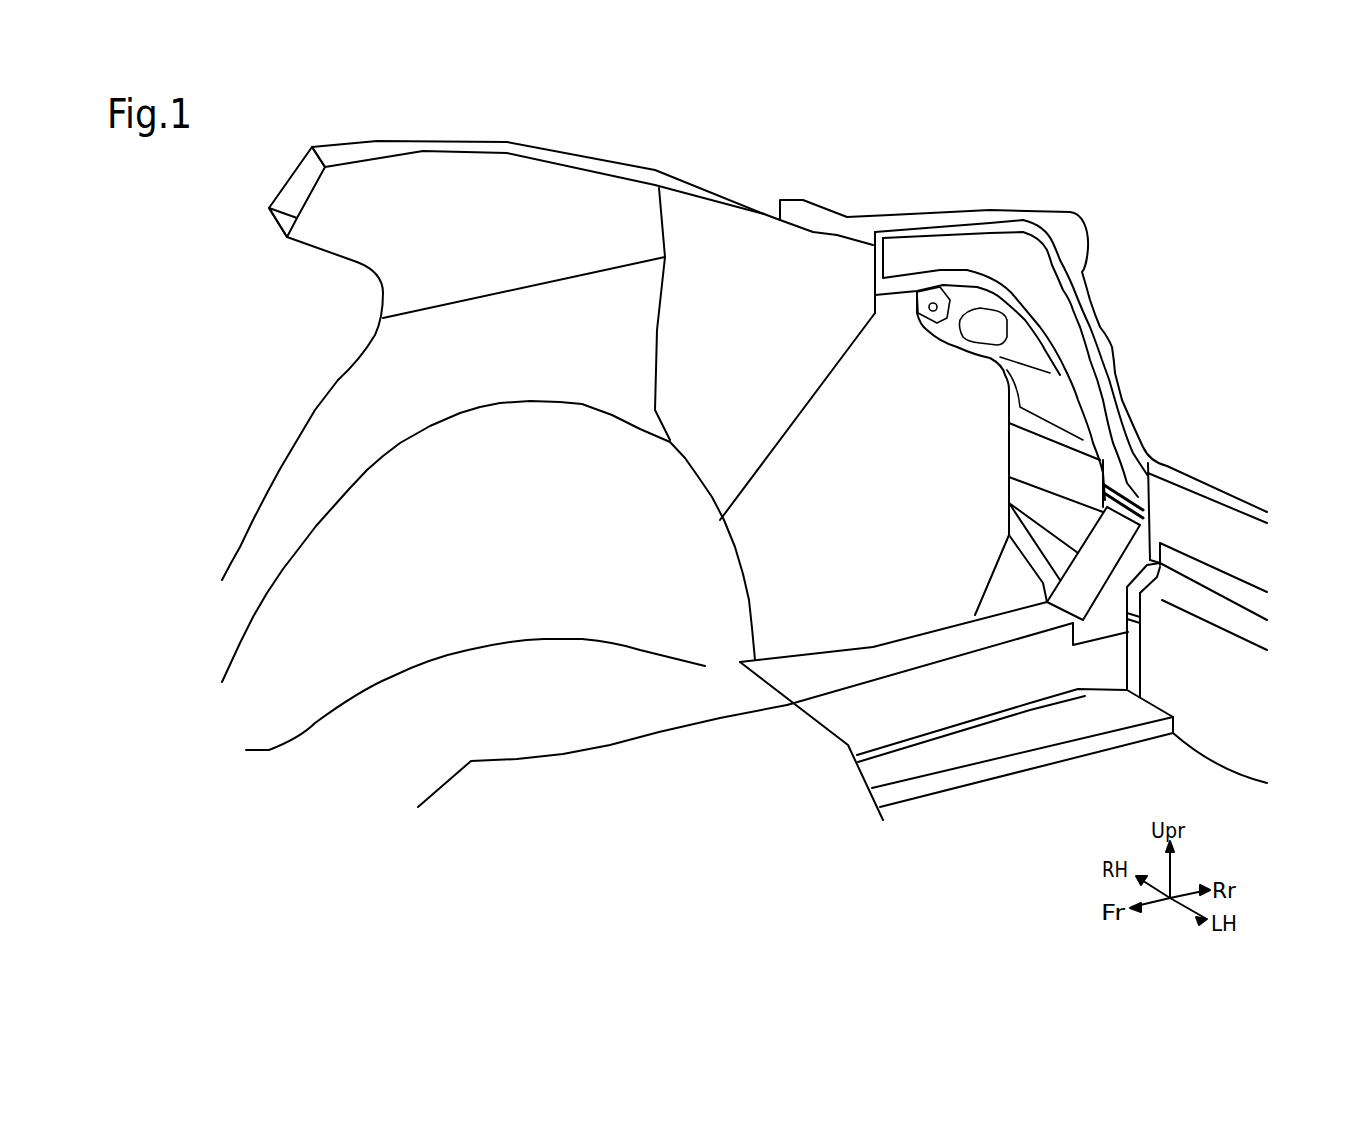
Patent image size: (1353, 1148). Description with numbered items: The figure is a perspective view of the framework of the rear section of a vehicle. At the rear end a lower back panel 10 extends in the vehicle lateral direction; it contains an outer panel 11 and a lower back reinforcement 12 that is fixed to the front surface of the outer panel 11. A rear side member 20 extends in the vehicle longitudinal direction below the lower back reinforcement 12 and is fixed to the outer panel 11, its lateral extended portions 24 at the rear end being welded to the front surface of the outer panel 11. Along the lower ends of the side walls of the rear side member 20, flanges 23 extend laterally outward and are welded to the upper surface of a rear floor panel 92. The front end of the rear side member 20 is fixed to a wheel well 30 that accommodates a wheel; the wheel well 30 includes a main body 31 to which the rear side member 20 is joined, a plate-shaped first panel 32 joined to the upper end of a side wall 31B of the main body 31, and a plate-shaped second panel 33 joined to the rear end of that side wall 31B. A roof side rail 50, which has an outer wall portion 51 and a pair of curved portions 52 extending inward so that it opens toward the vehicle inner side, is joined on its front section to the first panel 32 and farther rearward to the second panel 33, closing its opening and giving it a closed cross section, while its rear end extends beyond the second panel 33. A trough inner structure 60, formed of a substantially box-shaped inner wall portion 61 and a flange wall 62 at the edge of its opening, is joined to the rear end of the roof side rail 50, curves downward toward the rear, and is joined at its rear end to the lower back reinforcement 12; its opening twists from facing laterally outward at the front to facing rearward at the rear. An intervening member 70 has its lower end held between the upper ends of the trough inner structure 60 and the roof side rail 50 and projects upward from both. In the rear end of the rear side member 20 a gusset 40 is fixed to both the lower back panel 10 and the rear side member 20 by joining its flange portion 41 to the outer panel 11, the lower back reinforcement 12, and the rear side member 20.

The lower back panel 10 is at (1253, 490).
The outer panel 11 is at (1253, 723).
The lower back reinforcement 12 is at (1253, 548).
The rear side member 20 is at (883, 650).
The flange 23 is at (988, 720).
The lateral extended portion 24 is at (1130, 660).
The wheel well 30 is at (248, 429).
The main body 31 is at (733, 627).
The side wall 31B is at (387, 355).
The first panel 32 is at (320, 214).
The second panel 33 is at (793, 393).
The gusset 40 is at (1078, 577).
The flange portion 41 is at (1143, 577).
The roof side rail 50 is at (538, 140).
The outer wall portion 51 is at (290, 173).
The curved portion 52 is at (335, 153).
The trough inner structure 60 is at (1120, 262).
The inner wall portion 61 is at (1014, 252).
The flange wall 62 is at (1040, 243).
The intervening member 70 is at (872, 226).
The rear floor panel 92 is at (940, 757).